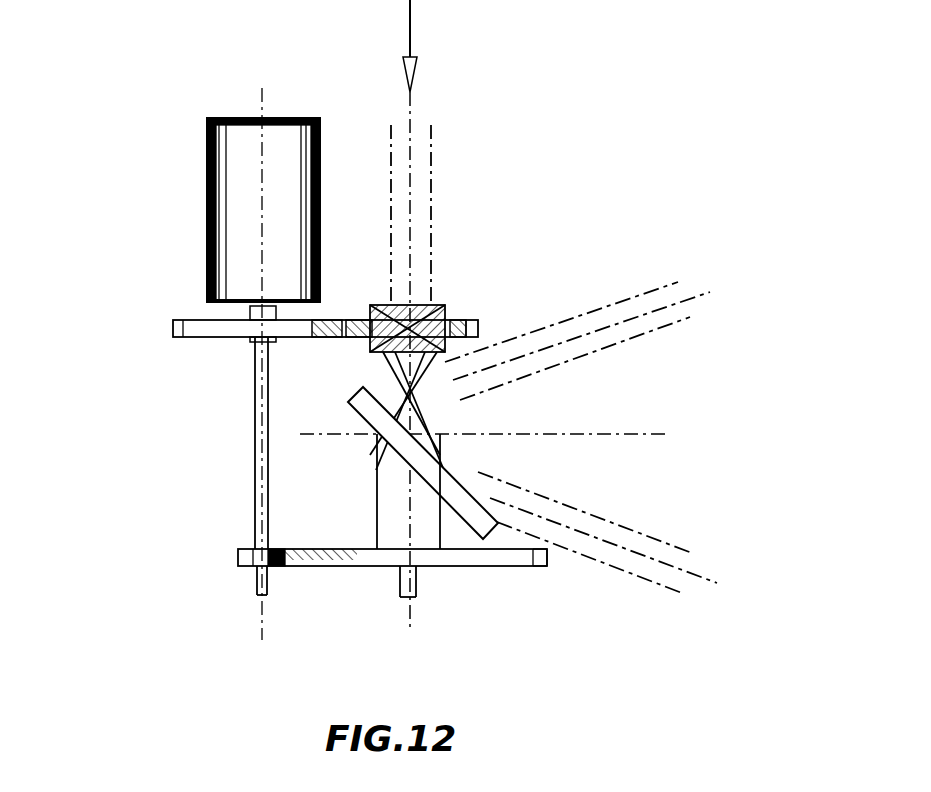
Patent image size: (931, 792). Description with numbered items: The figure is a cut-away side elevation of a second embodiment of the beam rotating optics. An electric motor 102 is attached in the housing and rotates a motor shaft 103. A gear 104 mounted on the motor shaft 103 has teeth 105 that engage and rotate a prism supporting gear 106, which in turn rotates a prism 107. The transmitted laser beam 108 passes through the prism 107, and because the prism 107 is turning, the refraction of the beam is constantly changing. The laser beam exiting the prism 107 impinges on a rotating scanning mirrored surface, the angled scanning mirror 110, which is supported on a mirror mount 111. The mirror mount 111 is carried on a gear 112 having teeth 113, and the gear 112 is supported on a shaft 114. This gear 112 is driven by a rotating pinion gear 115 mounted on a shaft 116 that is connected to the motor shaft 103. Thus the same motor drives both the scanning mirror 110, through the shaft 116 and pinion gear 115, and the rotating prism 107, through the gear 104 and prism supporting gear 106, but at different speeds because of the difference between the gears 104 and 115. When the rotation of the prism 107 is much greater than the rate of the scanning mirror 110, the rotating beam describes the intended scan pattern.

The electric motor 102 is at (238, 118).
The motor shaft 103 is at (250, 312).
The gear 104 is at (200, 338).
The teeth 105 is at (176, 337).
The prism supporting gear 106 is at (345, 320).
The prism 107 is at (440, 305).
The transmitted laser beam 108 is at (433, 212).
The scanning mirror 110 is at (393, 446).
The mirror mount 111 is at (387, 520).
The gear 112 is at (458, 567).
The teeth 113 is at (545, 567).
The shaft 114 is at (412, 575).
The pinion gear 115 is at (280, 568).
The shaft 116 is at (257, 570).